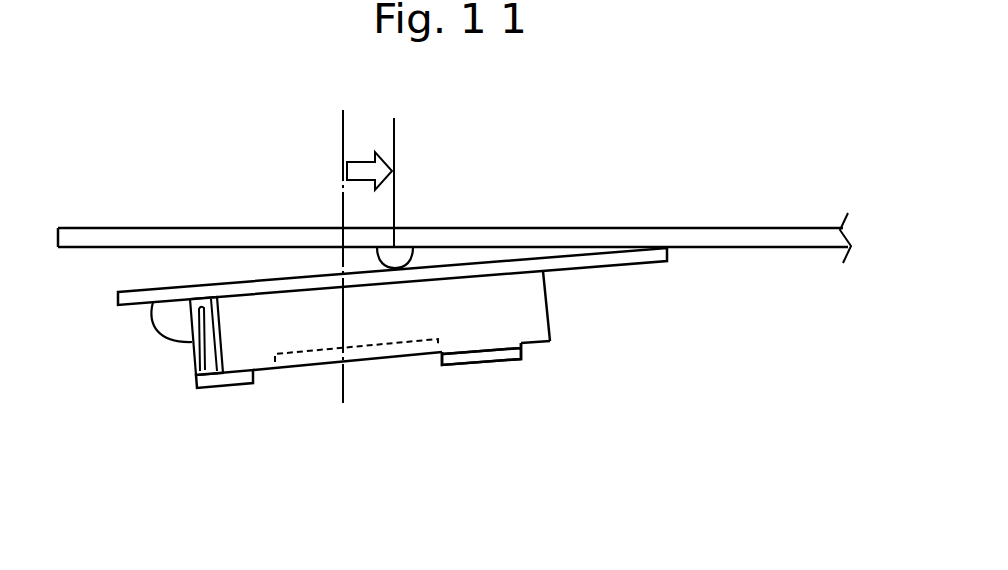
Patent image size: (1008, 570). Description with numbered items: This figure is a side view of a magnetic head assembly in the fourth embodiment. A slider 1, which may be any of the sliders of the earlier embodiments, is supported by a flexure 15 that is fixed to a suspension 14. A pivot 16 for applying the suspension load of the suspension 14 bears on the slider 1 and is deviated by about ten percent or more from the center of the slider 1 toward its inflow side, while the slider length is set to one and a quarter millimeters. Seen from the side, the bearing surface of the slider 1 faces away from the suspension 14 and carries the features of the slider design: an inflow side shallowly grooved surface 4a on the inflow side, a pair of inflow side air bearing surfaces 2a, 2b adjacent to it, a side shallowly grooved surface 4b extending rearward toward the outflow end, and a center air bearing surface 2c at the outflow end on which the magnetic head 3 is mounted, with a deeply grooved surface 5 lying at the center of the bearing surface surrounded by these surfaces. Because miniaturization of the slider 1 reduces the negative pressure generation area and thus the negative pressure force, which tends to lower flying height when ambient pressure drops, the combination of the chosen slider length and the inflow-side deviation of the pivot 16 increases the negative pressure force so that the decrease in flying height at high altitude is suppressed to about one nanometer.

The slider 1 is at (550, 297).
The inflow side air bearing surface 2a is at (483, 365).
The inflow side air bearing surface 2b is at (481, 354).
The center air bearing surface 2c is at (225, 388).
The magnetic head 3 is at (192, 367).
The inflow side shallowly grooved surface 4a is at (535, 347).
The side shallowly grooved surface 4b is at (318, 367).
The deeply grooved surface 5 is at (380, 352).
The suspension 14 is at (733, 237).
The flexure 15 is at (229, 290).
The pivot 16 is at (432, 257).